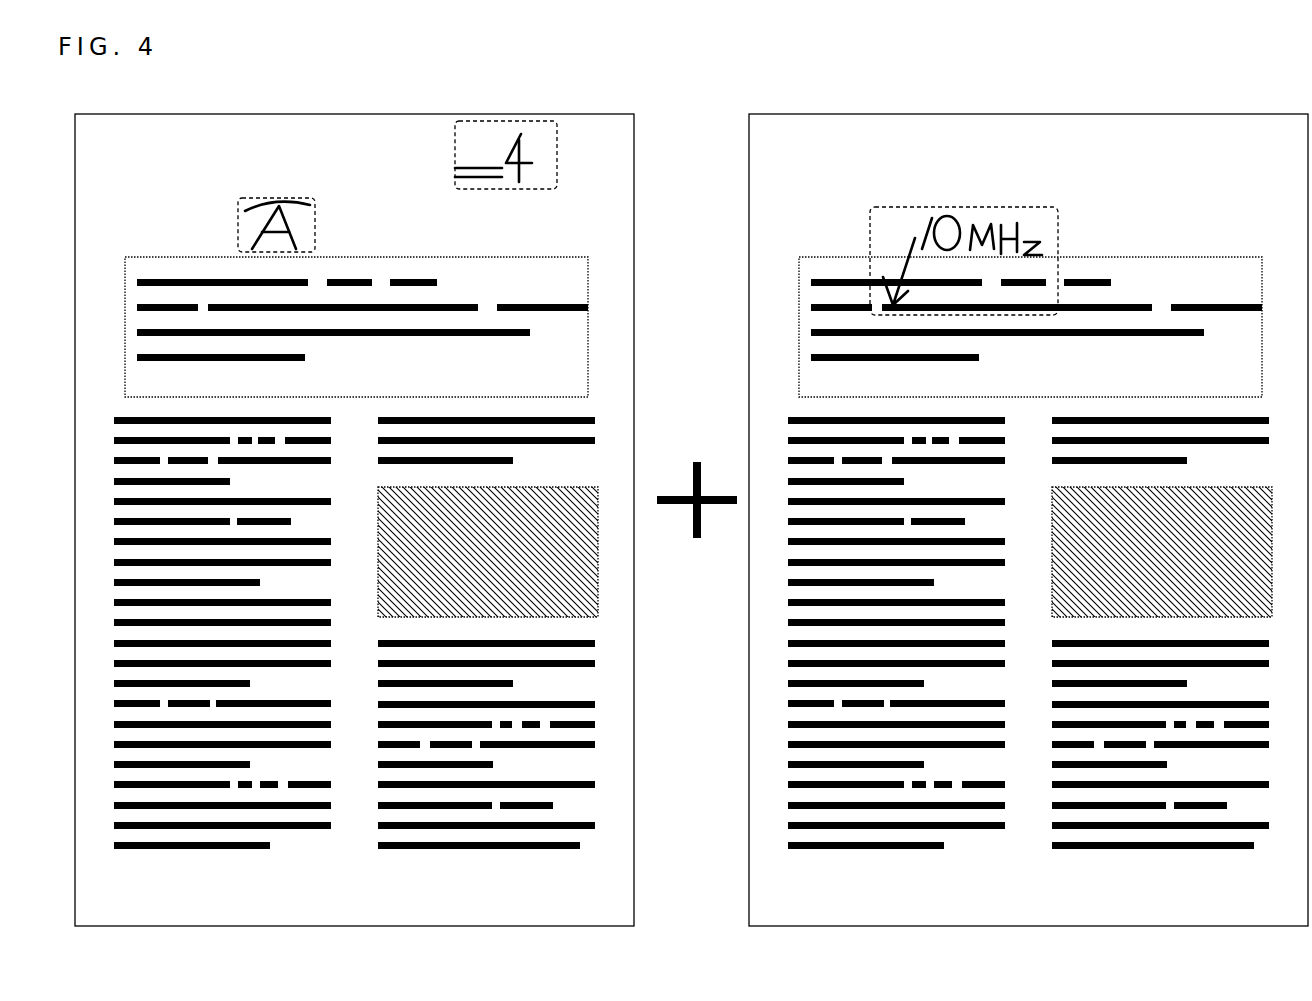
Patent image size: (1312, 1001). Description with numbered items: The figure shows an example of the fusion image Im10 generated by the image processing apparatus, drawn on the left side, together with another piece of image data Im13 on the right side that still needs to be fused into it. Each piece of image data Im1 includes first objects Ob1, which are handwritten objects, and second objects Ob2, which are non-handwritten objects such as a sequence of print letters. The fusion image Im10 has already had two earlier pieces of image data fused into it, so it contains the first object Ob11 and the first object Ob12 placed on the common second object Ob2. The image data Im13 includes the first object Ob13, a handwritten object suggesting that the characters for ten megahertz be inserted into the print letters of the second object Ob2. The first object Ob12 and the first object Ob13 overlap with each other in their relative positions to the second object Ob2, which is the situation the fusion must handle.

The fusion image Im10 is at (342, 114).
The image data Im13 is at (1016, 114).
The image data Im1 is at (1028, 503).
The second object Ob2 is at (285, 152).
The first object Ob1 is at (445, 165).
The first object Ob11 is at (492, 117).
The first object Ob12 is at (316, 232).
The first object Ob13 is at (1060, 240).